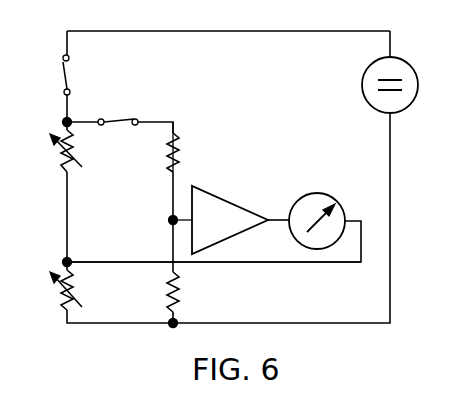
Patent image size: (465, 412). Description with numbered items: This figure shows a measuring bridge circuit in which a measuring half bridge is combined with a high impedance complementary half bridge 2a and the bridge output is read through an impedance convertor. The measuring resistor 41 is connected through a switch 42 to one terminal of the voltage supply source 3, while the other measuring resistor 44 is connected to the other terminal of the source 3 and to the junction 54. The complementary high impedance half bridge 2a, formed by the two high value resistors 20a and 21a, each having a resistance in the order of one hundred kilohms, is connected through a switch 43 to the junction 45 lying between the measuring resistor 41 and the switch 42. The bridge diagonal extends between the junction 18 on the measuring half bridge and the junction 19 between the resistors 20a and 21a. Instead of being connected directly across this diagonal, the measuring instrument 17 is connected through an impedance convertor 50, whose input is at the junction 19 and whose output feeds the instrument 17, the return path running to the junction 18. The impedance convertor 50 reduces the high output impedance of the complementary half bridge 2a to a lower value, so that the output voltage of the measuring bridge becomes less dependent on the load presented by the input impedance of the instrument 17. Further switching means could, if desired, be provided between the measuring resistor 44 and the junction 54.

The voltage supply source 3 is at (396, 58).
The switch 42 is at (63, 71).
The junction 45 is at (62, 121).
The switch 43 is at (118, 120).
The measuring resistor 41 is at (53, 160).
The measuring resistor 44 is at (60, 288).
The junction 18 is at (72, 259).
The resistor 20a is at (178, 148).
The complementary high impedance half bridge 2a is at (208, 152).
The resistor 21a is at (168, 292).
The junction 54 is at (178, 320).
The junction 19 is at (170, 219).
The impedance convertor 50 is at (222, 195).
The measuring instrument 17 is at (322, 194).